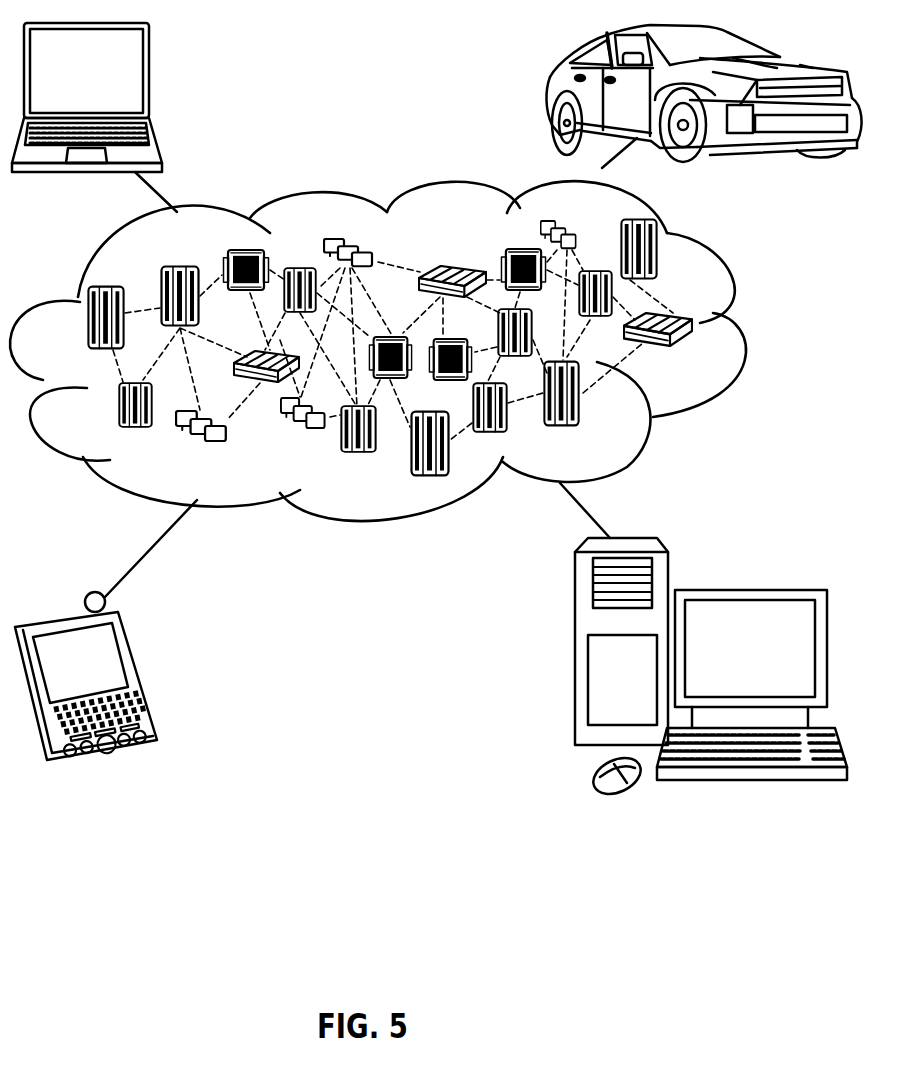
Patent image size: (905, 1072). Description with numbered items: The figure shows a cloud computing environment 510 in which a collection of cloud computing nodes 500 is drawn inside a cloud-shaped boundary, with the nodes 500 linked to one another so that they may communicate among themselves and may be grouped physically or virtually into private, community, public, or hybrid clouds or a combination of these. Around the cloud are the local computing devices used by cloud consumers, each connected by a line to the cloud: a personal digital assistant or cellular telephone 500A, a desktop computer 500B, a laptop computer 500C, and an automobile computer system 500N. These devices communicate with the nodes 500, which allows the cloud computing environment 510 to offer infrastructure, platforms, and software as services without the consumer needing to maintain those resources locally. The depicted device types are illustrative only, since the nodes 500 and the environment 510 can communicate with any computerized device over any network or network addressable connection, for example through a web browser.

The cloud computing node 500 is at (722, 365).
The cloud computing environment 510 is at (747, 329).
The personal digital assistant (PDA) or cellular telephone 500A is at (143, 673).
The desktop computer 500B is at (748, 590).
The laptop computer 500C is at (150, 78).
The automobile computer system 500N is at (550, 90).